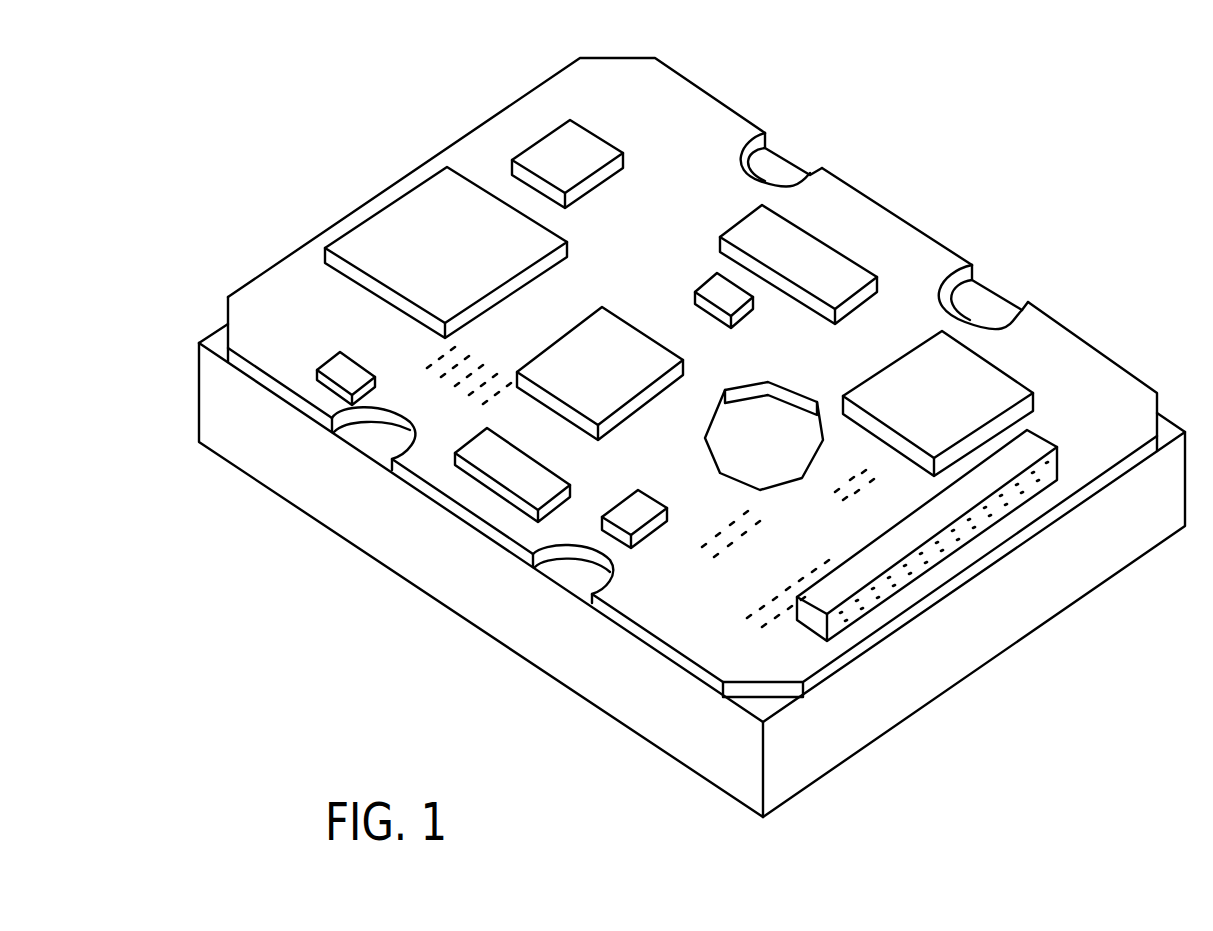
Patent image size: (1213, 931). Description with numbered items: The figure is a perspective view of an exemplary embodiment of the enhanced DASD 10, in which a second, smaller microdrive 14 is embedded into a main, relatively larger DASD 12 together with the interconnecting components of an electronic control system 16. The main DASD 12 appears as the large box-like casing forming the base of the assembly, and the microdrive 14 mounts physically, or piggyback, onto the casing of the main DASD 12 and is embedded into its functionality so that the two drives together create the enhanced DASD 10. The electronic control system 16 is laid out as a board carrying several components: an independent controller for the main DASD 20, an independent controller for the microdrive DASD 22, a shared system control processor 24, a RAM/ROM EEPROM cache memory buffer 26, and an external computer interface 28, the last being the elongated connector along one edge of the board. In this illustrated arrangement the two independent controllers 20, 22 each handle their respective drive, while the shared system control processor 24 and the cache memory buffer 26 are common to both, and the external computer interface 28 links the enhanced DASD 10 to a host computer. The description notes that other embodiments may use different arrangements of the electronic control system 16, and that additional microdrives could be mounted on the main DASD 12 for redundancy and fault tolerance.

The enhanced DASD 10 is at (692, 570).
The main DASD 12 is at (663, 705).
The microdrive 14 is at (438, 243).
The electronic control system 16 is at (867, 145).
The independent controller for the main DASD 20 is at (613, 372).
The independent controller for the microdrive DASD 22 is at (568, 160).
The shared system control processor 24 is at (972, 395).
The RAM/ROM EEPROM cache memory buffer 26 is at (808, 265).
The external computer interface 28 is at (1020, 465).